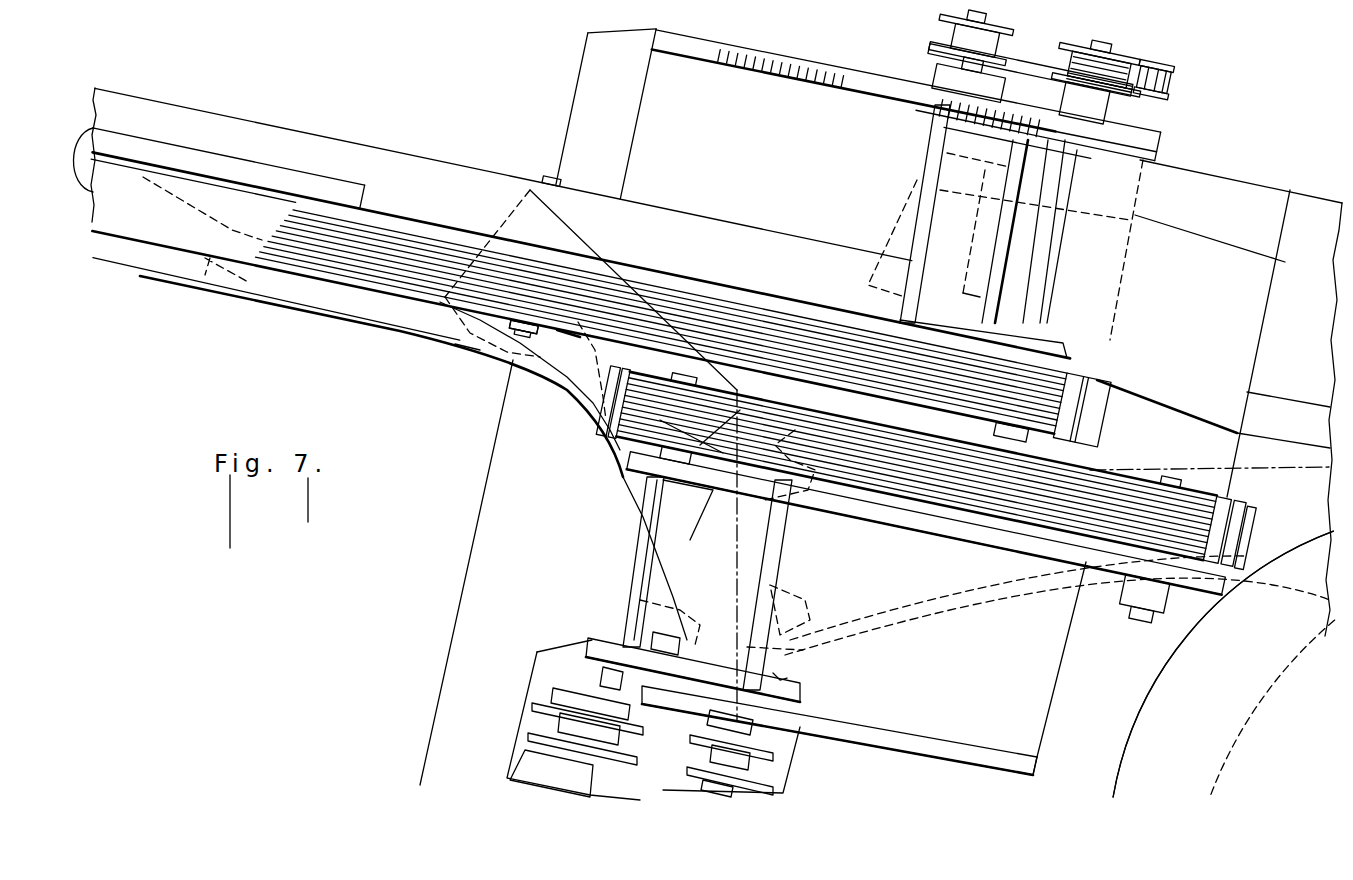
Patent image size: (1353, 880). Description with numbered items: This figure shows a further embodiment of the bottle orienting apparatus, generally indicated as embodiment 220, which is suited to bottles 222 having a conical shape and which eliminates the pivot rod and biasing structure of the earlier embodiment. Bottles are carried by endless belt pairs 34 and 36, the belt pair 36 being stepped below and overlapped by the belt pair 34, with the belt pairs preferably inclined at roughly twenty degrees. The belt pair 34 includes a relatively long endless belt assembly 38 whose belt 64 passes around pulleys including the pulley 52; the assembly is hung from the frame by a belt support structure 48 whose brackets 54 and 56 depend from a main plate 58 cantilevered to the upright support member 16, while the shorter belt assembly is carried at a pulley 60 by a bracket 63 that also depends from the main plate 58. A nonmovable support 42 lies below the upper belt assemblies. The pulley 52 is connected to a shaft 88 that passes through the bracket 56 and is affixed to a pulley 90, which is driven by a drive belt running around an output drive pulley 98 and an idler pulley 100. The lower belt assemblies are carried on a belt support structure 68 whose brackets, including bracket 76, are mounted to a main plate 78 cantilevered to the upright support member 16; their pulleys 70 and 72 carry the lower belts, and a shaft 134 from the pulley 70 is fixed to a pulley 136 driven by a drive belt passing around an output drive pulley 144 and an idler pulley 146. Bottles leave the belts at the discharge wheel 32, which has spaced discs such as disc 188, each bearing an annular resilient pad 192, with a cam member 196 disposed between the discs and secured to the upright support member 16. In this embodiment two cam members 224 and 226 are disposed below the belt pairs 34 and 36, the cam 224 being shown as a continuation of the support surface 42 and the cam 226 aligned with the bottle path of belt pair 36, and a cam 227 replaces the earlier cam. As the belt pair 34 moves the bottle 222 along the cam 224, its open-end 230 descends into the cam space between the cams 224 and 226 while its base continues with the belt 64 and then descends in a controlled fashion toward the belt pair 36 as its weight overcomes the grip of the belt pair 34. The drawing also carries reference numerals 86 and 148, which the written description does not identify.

The upright support member 16 is at (1217, 178).
The discharge wheel 32 is at (1130, 704).
The endless belt pair 34 is at (92, 130).
The endless belt pair 36 is at (1248, 530).
The relatively long endless belt assembly 38 is at (163, 248).
The nonmovable support 42 is at (231, 298).
The belt support structure 48 is at (749, 40).
The pulley 52 is at (1090, 371).
The bracket 54 is at (732, 127).
The bracket 56 is at (983, 187).
The main plate 58 is at (808, 64).
The pulley 60 is at (543, 335).
The bracket 63 is at (609, 50).
The belt 64 is at (278, 240).
The belt support structure 68 is at (918, 752).
The pulley 70 is at (740, 391).
The pulley 72 is at (1230, 498).
The bracket 76 is at (1030, 44).
The main plate 78 is at (968, 760).
The lower rail 86 is at (912, 498).
The shaft 88 is at (1064, 336).
The pulley 90 is at (1118, 52).
The output drive pulley 98 is at (1168, 61).
The idler pulley 100 is at (932, 18).
The shaft 134 is at (636, 580).
The pulley 136 is at (720, 790).
The output drive pulley 144 is at (540, 702).
The idler pulley 146 is at (782, 766).
The pulley 148 is at (537, 763).
The disc 188 is at (1150, 667).
The annular resilient pad 192 is at (1247, 716).
The cam member 196 is at (1323, 464).
The bottle orienting embodiment 220 is at (436, 80).
The bottle 222 is at (590, 237).
The cam member 224 is at (470, 347).
The cam member 226 is at (965, 583).
The cam 227 is at (1215, 303).
The open-end 230 is at (803, 421).